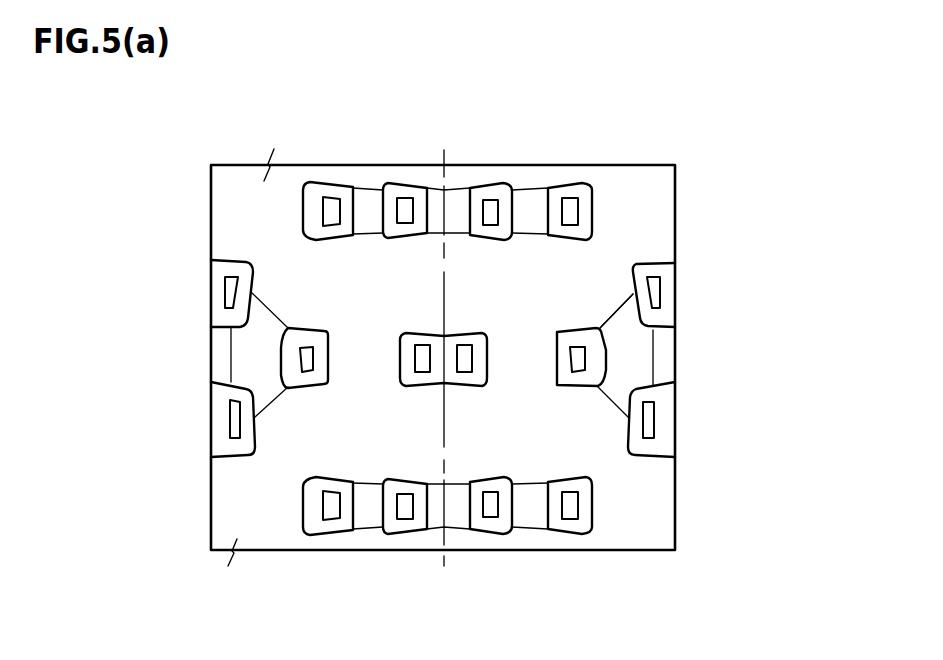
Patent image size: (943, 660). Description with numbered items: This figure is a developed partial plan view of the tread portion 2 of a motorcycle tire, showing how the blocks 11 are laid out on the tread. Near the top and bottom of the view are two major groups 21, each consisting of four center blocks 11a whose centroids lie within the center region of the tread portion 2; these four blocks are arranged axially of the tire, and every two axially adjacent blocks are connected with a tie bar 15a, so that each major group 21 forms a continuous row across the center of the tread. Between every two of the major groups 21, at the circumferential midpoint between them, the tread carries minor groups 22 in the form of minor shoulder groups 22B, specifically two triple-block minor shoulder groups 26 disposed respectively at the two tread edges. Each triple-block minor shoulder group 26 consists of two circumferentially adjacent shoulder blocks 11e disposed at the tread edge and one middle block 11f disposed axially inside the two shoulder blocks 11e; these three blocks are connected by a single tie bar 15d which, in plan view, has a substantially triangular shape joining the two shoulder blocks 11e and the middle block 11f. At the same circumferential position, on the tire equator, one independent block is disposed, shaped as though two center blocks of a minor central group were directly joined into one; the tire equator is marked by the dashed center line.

The tread portion 2 is at (623, 158).
The major group 21 is at (521, 414).
The block 11 is at (521, 397).
The center block 11a is at (315, 523).
The shoulder block 11e is at (663, 293).
The middle block 11f is at (567, 332).
The tie bar 15a is at (368, 512).
The tie bar 15d is at (628, 348).
The minor group 22 is at (258, 373).
The minor shoulder group 22B is at (716, 355).
The triple-block minor shoulder group 26 is at (625, 375).